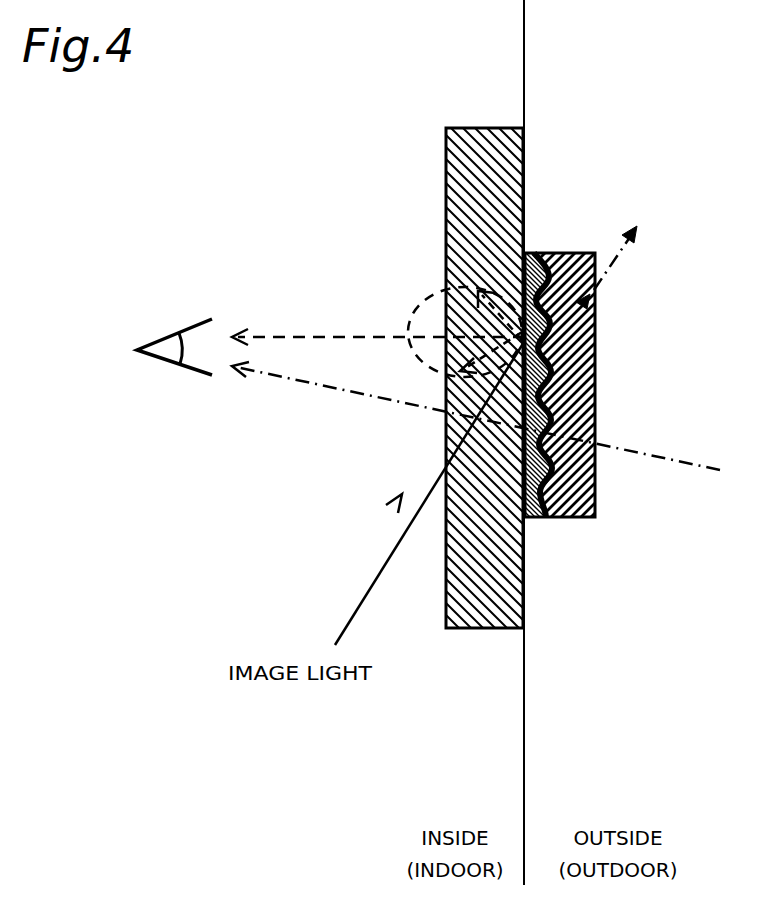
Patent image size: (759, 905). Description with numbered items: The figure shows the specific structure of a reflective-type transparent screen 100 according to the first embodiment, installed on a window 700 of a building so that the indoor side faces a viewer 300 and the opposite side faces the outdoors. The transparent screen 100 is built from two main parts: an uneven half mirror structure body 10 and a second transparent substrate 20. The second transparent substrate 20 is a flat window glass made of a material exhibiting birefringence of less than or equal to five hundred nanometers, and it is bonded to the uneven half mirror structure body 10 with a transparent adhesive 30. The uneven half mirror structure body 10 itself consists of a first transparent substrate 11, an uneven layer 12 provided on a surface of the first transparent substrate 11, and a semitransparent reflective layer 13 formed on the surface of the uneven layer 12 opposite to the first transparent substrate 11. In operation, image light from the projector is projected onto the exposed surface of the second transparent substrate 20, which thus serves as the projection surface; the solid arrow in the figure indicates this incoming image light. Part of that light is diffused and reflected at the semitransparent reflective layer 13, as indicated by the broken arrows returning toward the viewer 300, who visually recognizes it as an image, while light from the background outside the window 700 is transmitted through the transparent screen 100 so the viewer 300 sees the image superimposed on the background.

The transparent screen 100 is at (645, 64).
The uneven half mirror structure body 10 is at (600, 394).
The first transparent substrate 11 is at (587, 470).
The uneven layer 12 is at (583, 517).
The semitransparent reflective layer 13 is at (548, 517).
The second transparent substrate 20 is at (487, 628).
The transparent adhesive 30 is at (535, 517).
The viewer 300 is at (125, 343).
The window 700 is at (525, 793).